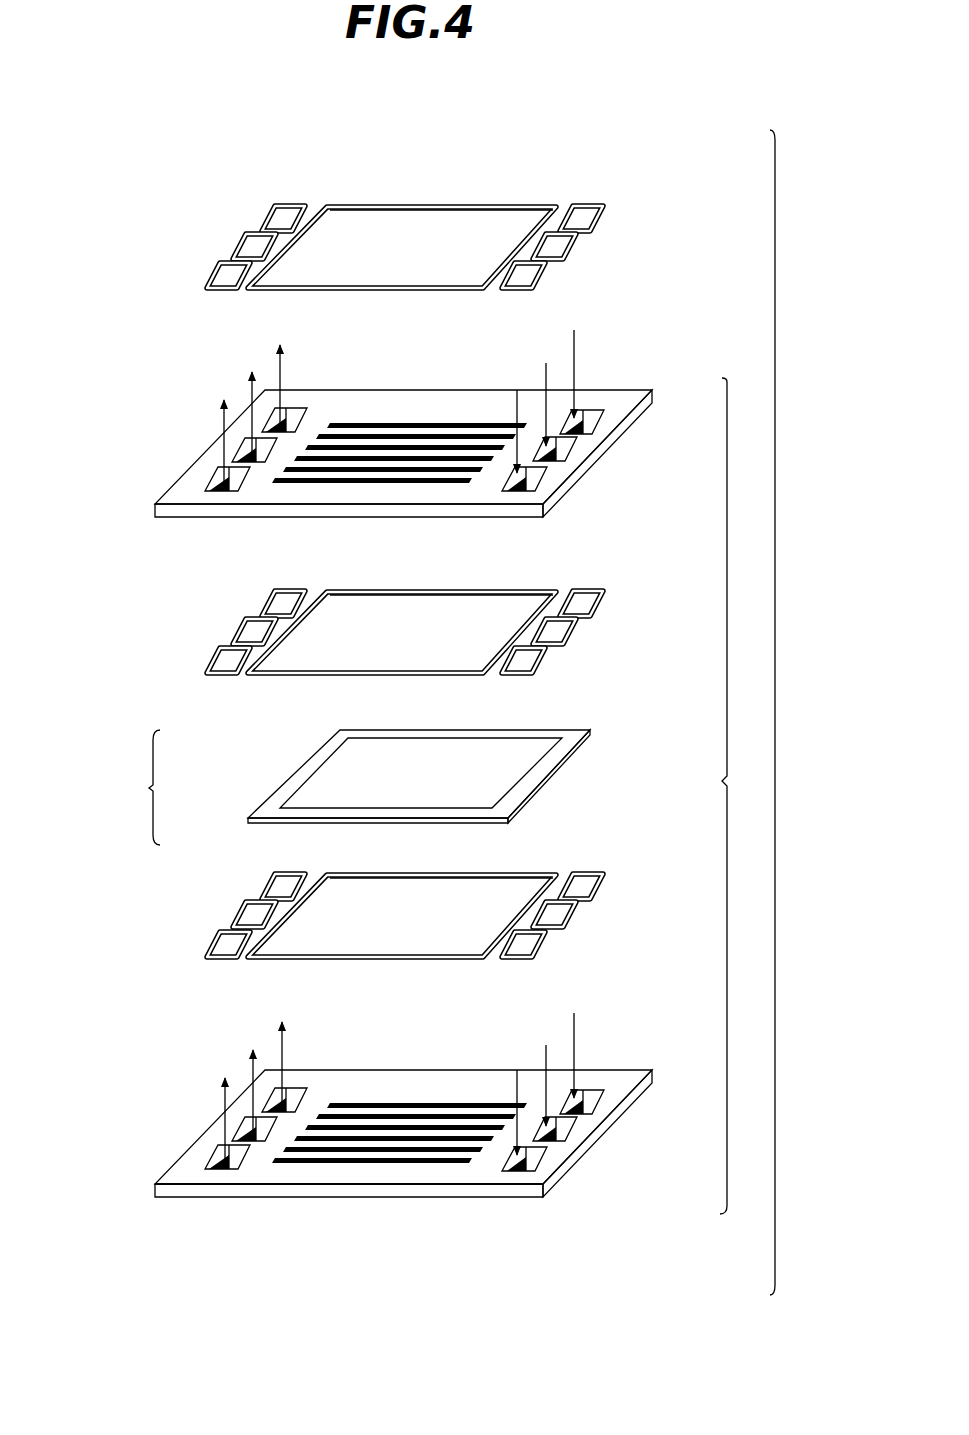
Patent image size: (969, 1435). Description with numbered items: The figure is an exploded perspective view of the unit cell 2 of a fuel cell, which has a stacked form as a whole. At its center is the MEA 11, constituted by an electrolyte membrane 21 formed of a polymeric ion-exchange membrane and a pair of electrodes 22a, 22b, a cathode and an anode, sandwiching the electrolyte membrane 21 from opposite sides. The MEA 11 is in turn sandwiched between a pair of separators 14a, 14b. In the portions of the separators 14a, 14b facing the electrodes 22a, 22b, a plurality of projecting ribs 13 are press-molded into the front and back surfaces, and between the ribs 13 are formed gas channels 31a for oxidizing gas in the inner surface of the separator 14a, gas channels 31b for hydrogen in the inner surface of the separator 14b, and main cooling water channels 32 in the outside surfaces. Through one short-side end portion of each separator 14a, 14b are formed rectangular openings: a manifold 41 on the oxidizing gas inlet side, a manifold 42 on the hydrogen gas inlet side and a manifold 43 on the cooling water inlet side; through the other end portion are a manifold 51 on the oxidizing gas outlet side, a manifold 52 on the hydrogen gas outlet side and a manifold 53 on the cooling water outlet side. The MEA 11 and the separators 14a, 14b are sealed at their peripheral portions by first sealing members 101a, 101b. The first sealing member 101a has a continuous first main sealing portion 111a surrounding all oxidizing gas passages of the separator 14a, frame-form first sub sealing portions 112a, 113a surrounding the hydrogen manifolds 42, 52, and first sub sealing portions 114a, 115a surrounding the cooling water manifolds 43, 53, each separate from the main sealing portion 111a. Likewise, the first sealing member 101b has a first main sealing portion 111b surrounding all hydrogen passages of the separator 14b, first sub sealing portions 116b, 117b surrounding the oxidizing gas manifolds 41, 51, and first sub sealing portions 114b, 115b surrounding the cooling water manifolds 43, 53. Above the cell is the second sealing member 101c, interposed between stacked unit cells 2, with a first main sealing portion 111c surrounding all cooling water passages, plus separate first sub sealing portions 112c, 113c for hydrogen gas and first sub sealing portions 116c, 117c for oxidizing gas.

The unit cell 2 is at (737, 796).
The MEA 11 is at (356, 789).
The projecting ribs 13 is at (378, 425).
The separator 14a is at (152, 1191).
The separator 14b is at (355, 445).
The electrolyte membrane 21 is at (262, 803).
The electrode 22a is at (270, 826).
The electrode 22b is at (300, 778).
The gas channels for oxidizing gas 31a is at (398, 1135).
The gas channels for hydrogen 31b is at (266, 520).
The main cooling water channels 32 is at (430, 425).
The manifold on the oxidizing gas inlet side 41 is at (520, 490).
The manifold on the hydrogen gas inlet side 42 is at (550, 459).
The manifold on the cooling water inlet side 43 is at (578, 432).
The manifold on the oxidizing gas outlet side 51 is at (265, 425).
The manifold on the hydrogen gas outlet side 52 is at (238, 455).
The manifold on the cooling water outlet side 53 is at (215, 485).
The first sealing member 101a is at (417, 886).
The first sealing member 101b is at (399, 637).
The second sealing member 101c is at (426, 223).
The first main sealing portion 111a is at (418, 873).
The first main sealing portion 111b is at (372, 676).
The first main sealing portion 111c is at (440, 207).
The first sub sealing portion 112a is at (252, 908).
The first sub sealing portion 112c is at (250, 243).
The first sub sealing portion 113a is at (570, 918).
The first sub sealing portion 113c is at (570, 250).
The first sub sealing portion 114a is at (218, 942).
The first sub sealing portion 114b is at (216, 660).
The first sub sealing portion 115a is at (600, 890).
The first sub sealing portion 115b is at (592, 603).
The first sub sealing portion 116b is at (266, 600).
The first sub sealing portion 116c is at (278, 212).
The first sub sealing portion 117b is at (545, 660).
The first sub sealing portion 117c is at (540, 278).